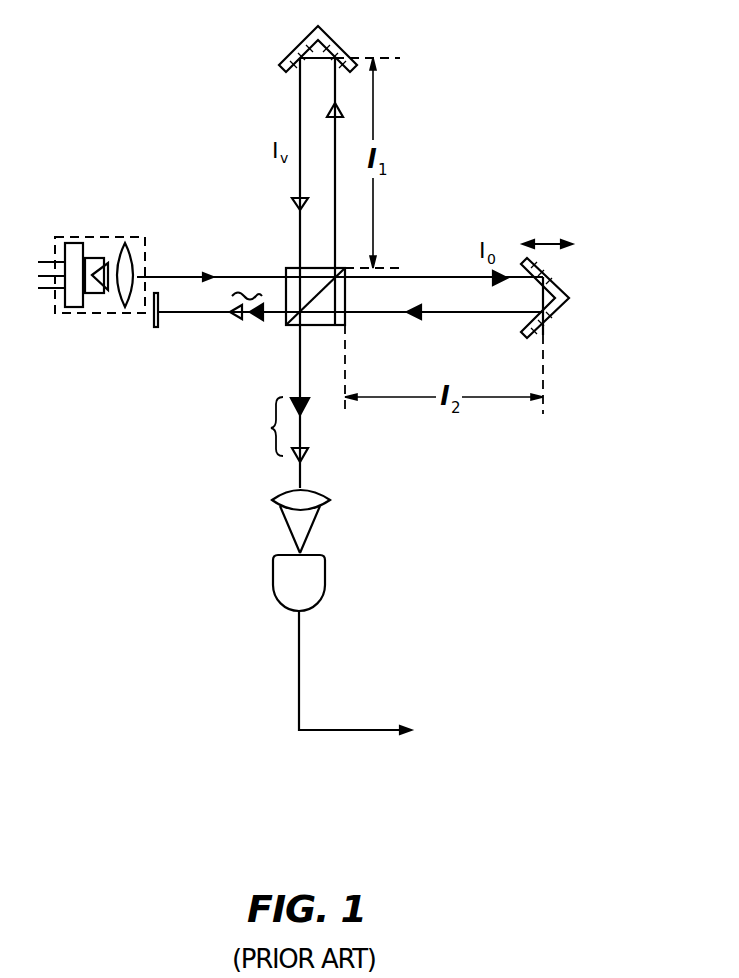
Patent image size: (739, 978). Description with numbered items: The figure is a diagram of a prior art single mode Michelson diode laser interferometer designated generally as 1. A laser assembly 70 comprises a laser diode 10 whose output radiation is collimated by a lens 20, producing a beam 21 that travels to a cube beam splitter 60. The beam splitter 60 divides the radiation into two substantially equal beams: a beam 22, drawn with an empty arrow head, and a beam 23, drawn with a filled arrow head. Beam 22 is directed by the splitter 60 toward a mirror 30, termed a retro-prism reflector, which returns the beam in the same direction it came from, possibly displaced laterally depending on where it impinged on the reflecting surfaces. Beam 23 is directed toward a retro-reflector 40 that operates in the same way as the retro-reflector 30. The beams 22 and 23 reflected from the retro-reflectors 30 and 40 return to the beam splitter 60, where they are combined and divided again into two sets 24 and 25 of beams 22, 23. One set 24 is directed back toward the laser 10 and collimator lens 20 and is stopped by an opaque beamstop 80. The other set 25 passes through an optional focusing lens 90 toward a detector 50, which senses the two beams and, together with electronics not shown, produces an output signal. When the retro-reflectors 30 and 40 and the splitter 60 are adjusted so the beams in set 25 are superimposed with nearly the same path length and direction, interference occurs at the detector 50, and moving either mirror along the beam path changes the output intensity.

The Michelson diode laser interferometer 1 is at (523, 128).
The laser diode 10 is at (72, 308).
The lens 20 is at (137, 265).
The beam 21 is at (228, 275).
The beam 22 is at (341, 110).
The beam 23 is at (498, 273).
The set of beams 24 is at (242, 290).
The set of beams 25 is at (272, 428).
The mirror 30 is at (333, 47).
The retro-reflector 40 is at (562, 288).
The detector 50 is at (275, 599).
The beam splitter 60 is at (345, 325).
The laser assembly 70 is at (118, 315).
The opaque beamstop 80 is at (153, 327).
The focusing lens 90 is at (273, 498).